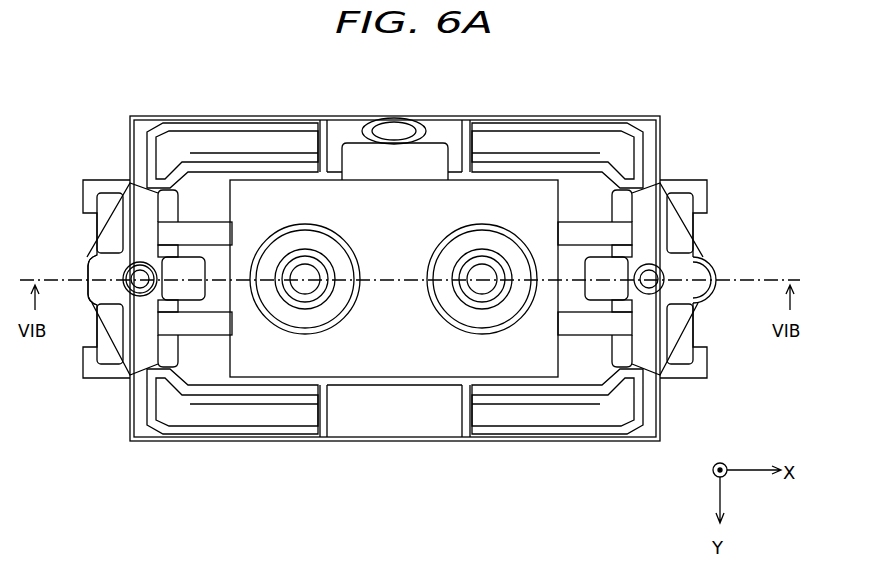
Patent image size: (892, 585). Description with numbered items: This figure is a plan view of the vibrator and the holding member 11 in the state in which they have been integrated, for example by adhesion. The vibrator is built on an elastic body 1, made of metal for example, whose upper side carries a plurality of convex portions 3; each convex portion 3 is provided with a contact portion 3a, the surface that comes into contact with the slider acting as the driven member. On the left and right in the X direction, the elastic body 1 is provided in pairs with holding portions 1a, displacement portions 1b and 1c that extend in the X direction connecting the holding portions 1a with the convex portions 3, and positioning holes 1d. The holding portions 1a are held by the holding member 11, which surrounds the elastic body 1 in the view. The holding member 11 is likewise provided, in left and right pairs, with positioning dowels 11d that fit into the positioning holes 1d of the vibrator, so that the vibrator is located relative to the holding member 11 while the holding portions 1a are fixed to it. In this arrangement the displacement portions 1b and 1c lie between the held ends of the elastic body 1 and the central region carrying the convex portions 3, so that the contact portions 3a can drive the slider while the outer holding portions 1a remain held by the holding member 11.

The elastic body 1 is at (430, 357).
The holding portion 1a is at (135, 255).
The displacement portion 1b is at (95, 272).
The displacement portion 1c is at (188, 268).
The positioning hole 1d is at (125, 258).
The convex portion 3 is at (283, 228).
The contact portion 3a is at (310, 266).
The holding member 11 is at (360, 410).
The positioning dowel 11d is at (138, 297).